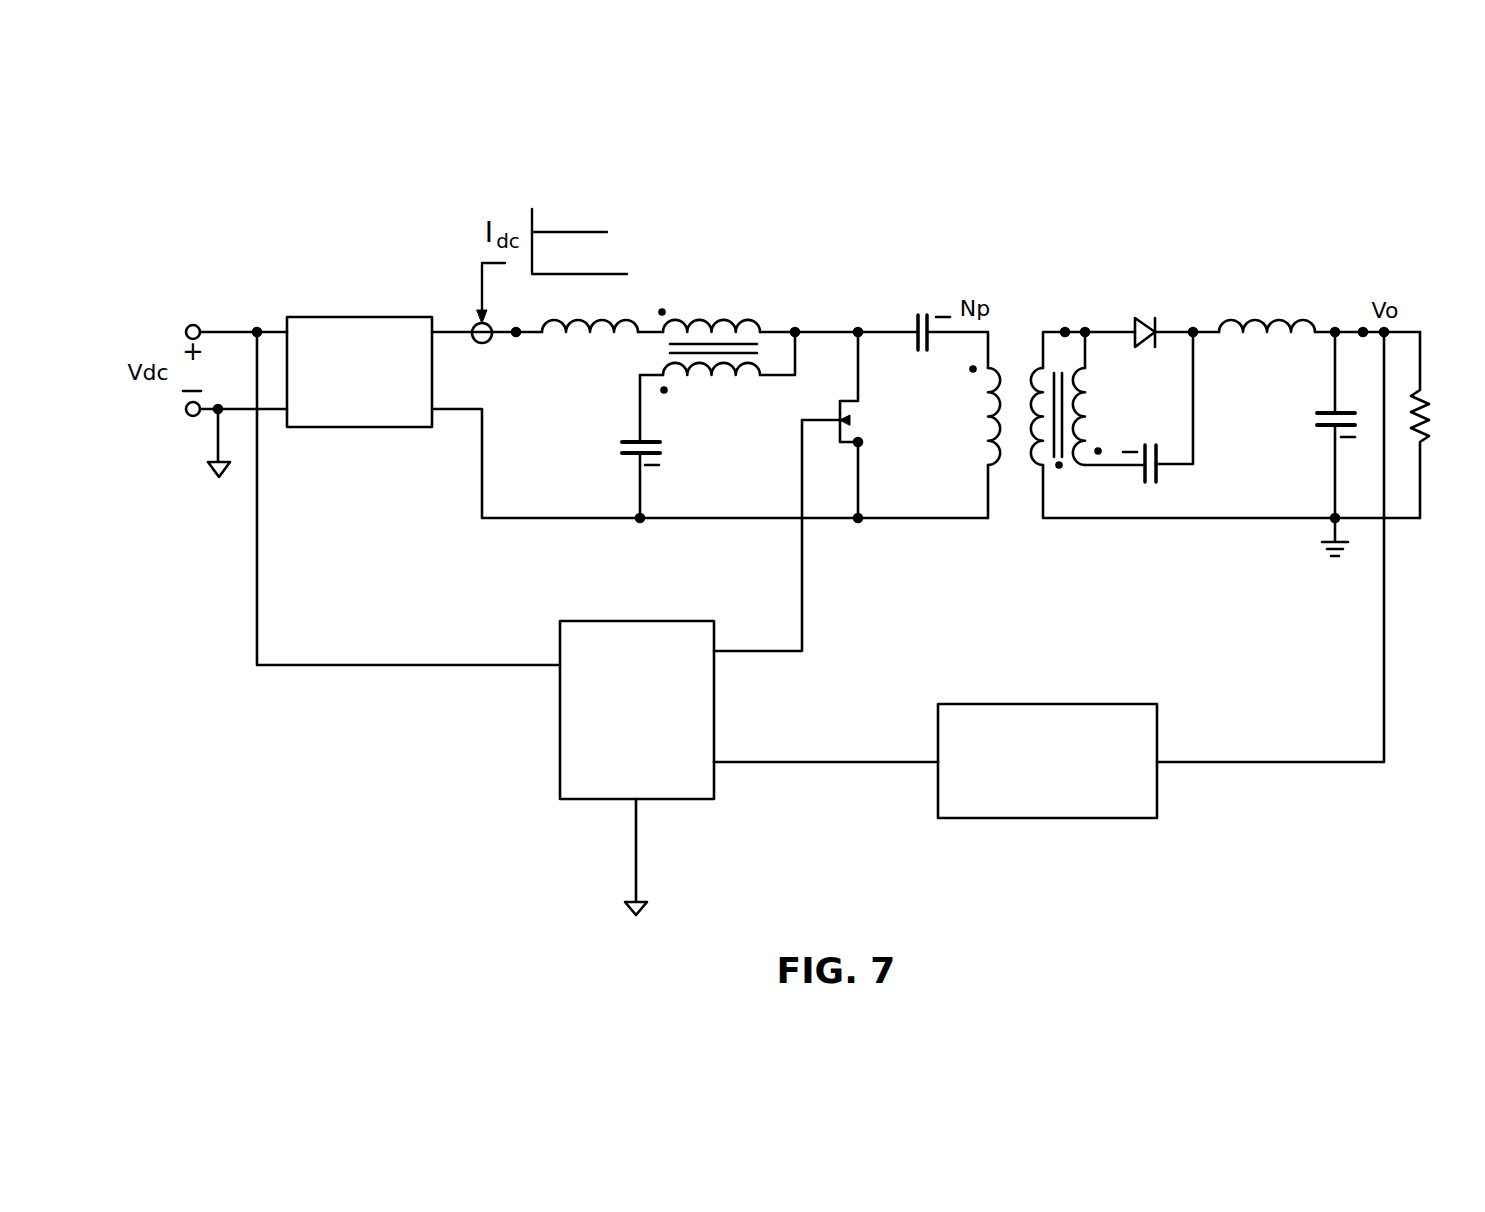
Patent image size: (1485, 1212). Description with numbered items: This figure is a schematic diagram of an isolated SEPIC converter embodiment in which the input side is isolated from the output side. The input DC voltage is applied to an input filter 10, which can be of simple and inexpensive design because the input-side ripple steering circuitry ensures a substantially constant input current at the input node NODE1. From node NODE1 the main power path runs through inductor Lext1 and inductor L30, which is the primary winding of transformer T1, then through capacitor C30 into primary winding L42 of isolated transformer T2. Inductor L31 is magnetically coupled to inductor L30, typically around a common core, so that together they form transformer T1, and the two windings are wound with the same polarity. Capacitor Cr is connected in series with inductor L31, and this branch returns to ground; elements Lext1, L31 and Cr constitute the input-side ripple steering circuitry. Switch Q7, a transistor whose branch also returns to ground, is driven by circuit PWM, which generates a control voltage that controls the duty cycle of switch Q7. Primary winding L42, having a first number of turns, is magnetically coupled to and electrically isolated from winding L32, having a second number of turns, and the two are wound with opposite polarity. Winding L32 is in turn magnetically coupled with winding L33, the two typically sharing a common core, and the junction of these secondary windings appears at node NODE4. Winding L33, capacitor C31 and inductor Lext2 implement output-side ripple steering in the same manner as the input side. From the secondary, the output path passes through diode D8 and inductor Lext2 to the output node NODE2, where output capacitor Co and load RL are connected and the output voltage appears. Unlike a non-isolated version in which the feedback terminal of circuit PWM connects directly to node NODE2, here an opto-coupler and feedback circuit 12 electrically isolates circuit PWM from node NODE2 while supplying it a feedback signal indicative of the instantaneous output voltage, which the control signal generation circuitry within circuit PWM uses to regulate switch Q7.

The input filter 10 is at (335, 317).
The opto-coupler and feedback circuit 12 is at (1052, 704).
The transformer T1 is at (706, 322).
The isolated transformer T2 is at (1199, 368).
The inductor L30 is at (747, 318).
The inductor L31 is at (712, 377).
The winding L32 is at (1035, 367).
The winding L33 is at (1083, 388).
The primary winding L42 is at (997, 407).
The capacitor C30 is at (919, 316).
The capacitor C31 is at (1158, 407).
The capacitor Cr is at (629, 446).
The output capacitor Co is at (1324, 425).
The diode D8 is at (1145, 316).
The switch Q7 is at (806, 491).
The load RL is at (1441, 425).
The inductor Lext1 is at (590, 308).
The inductor Lext2 is at (1267, 307).
The circuit PWM is at (637, 768).
The Node 1 NODE1 is at (515, 342).
The Node 2 NODE2 is at (1363, 332).
The Node 4 NODE4 is at (1065, 332).